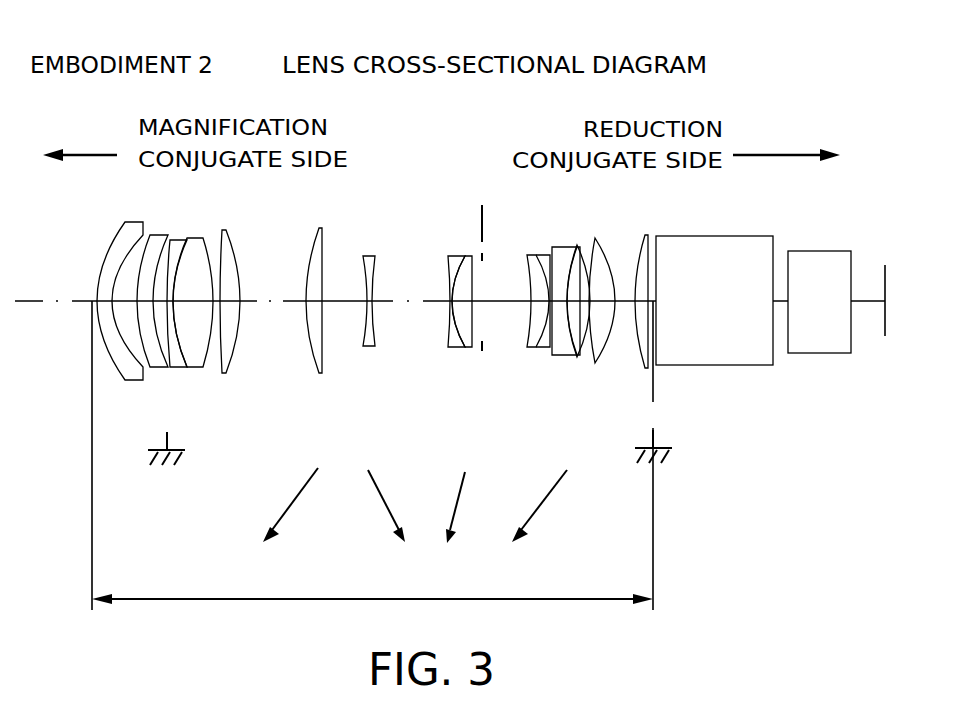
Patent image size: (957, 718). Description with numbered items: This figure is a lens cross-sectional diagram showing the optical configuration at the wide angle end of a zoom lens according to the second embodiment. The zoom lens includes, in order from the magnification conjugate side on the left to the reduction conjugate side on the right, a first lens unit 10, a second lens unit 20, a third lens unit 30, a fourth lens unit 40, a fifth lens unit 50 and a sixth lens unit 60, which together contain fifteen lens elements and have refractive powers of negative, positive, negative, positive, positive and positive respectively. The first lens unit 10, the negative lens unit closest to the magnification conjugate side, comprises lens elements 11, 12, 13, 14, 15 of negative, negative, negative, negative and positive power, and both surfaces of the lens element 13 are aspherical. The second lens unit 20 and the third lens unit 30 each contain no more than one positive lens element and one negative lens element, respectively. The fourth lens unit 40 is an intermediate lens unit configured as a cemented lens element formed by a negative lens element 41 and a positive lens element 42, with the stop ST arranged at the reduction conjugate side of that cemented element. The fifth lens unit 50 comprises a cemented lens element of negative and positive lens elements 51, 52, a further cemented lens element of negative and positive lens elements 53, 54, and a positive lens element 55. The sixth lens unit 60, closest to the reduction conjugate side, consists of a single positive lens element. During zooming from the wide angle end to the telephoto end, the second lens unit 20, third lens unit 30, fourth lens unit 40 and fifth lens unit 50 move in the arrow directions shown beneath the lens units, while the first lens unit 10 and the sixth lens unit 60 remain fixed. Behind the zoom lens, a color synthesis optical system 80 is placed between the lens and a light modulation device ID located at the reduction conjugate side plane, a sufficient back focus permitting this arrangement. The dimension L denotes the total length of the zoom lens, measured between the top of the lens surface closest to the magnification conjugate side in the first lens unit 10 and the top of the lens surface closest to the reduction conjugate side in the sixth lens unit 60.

The first lens unit 10 is at (156, 303).
The lens element 11 is at (128, 248).
The lens element 12 is at (157, 238).
The lens element 13 is at (178, 240).
The lens element 14 is at (197, 242).
The lens element 15 is at (223, 230).
The second lens unit 20 is at (293, 377).
The third lens unit 30 is at (345, 377).
The fourth lens unit 40 is at (446, 303).
The negative lens element 41 is at (448, 257).
The positive lens element 42 is at (468, 257).
The stop ST is at (480, 266).
The fifth lens unit 50 is at (593, 303).
The negative lens element 51 is at (535, 262).
The positive lens element 52 is at (547, 258).
The negative lens element 53 is at (565, 257).
The positive lens element 54 is at (578, 260).
The positive lens element 55 is at (603, 255).
The sixth lens unit 60 is at (627, 377).
The color synthesis optical system 80 is at (753, 330).
The light modulation device ID is at (887, 338).
The total length of the zoom lens L is at (372, 455).